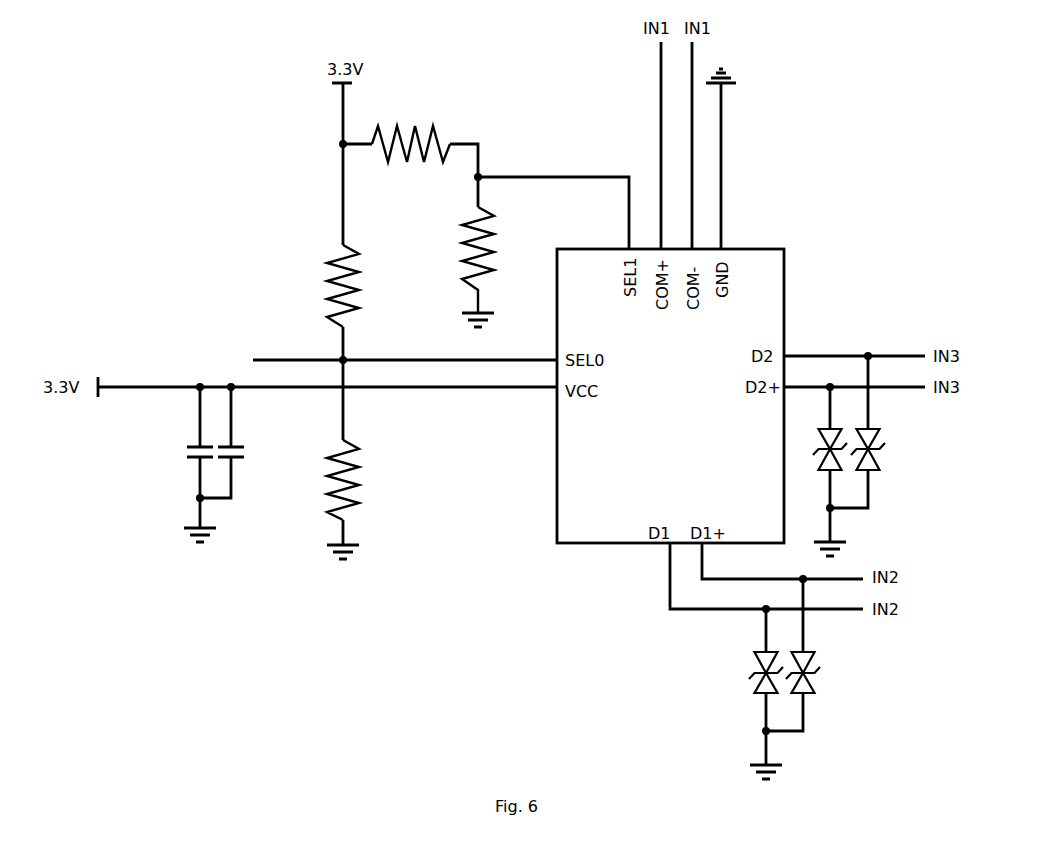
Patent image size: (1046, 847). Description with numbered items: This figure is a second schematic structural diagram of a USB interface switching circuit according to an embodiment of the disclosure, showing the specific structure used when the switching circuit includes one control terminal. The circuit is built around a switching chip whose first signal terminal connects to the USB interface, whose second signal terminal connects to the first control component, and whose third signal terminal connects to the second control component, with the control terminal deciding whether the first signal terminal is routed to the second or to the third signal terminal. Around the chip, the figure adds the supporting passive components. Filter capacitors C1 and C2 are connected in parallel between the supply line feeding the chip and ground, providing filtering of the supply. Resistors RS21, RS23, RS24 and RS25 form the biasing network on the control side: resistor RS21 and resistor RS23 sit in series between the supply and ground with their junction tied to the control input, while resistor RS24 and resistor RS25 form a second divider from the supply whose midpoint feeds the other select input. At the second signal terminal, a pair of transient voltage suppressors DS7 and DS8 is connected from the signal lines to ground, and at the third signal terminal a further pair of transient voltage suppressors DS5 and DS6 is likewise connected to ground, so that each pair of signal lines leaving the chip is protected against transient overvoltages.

The resistor RS21 is at (311, 286).
The resistor RS23 is at (377, 480).
The resistor RS24 is at (411, 131).
The resistor RS25 is at (453, 267).
The filter capacitor C1 is at (182, 454).
The filter capacitor C2 is at (246, 454).
The transient voltage suppressor DS5 is at (887, 449).
The transient voltage suppressor DS6 is at (817, 449).
The transient voltage suppressor DS7 is at (823, 672).
The transient voltage suppressor DS8 is at (740, 672).